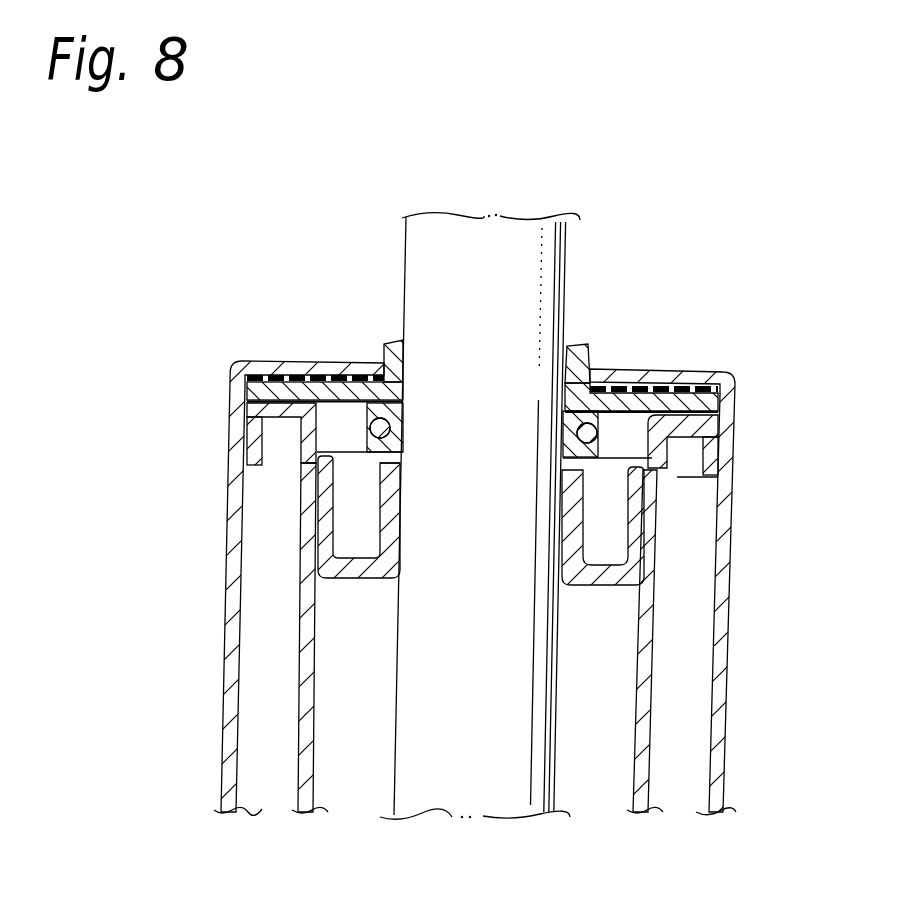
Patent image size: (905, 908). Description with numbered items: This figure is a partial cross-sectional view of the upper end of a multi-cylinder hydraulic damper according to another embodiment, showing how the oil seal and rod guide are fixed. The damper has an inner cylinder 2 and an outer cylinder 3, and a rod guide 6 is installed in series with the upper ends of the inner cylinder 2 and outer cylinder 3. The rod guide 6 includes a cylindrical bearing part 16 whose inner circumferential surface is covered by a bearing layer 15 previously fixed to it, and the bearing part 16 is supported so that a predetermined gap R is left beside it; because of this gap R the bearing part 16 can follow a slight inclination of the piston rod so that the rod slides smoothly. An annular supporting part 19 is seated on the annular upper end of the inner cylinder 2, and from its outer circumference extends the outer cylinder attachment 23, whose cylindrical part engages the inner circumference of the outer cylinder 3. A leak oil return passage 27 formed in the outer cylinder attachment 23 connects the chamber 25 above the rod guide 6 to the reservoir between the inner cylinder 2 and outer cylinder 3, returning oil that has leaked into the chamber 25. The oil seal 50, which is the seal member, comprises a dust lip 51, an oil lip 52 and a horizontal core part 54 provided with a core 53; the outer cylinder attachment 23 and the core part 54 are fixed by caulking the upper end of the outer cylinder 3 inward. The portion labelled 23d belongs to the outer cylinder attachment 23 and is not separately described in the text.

The inner cylinder 2 is at (304, 650).
The outer cylinder 3 is at (226, 597).
The rod guide 6 is at (356, 580).
The bearing layer 15 is at (402, 496).
The cylindrical bearing part 16 is at (383, 549).
The annular supporting part 19 is at (313, 458).
The outer cylinder attachment 23 is at (294, 422).
The seal flange 23d is at (246, 426).
The chamber 25 is at (337, 422).
The leak oil return passage 27 is at (722, 455).
The oil seal 50 is at (328, 363).
The dust lip 51 is at (404, 334).
The oil lip 52 is at (403, 416).
The core 53 is at (260, 362).
The core part 54 is at (303, 372).
The gap R is at (598, 518).